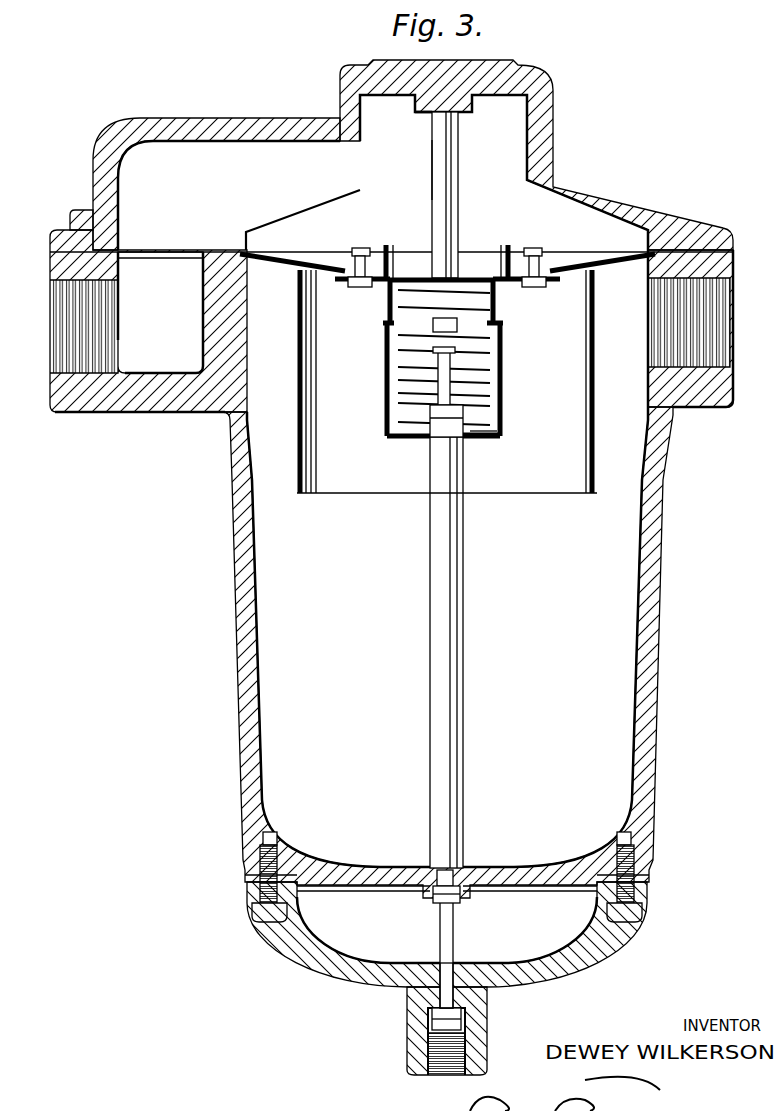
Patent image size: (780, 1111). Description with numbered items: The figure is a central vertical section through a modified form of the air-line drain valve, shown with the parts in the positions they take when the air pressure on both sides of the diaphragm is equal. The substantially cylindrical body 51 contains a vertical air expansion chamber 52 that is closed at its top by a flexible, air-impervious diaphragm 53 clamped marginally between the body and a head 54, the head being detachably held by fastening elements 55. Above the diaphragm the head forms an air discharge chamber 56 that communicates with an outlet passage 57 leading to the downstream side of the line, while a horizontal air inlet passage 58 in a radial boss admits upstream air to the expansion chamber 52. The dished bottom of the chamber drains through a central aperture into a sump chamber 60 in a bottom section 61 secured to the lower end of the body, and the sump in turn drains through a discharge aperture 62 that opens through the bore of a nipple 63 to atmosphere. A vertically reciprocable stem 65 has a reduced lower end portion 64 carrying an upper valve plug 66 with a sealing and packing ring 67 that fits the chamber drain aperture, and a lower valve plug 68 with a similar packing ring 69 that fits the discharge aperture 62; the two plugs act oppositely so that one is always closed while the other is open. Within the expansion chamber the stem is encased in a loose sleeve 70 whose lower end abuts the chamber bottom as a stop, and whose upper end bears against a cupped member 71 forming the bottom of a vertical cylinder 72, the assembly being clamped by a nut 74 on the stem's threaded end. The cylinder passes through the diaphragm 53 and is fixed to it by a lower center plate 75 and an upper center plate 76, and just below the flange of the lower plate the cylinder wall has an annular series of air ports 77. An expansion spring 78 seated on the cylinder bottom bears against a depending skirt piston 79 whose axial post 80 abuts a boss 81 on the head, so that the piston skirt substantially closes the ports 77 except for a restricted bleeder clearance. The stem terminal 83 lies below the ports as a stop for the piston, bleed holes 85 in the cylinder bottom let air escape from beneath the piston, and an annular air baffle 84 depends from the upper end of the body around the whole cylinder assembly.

The body 51 is at (439, 652).
The air expansion chamber 52 is at (259, 610).
The flexible diaphragm 53 is at (312, 257).
The head 54 is at (266, 112).
The fastening elements 55 is at (74, 210).
The air discharge chamber 56 is at (528, 152).
The outlet passage 57 is at (54, 323).
The air inlet passage 58 is at (726, 310).
The sump chamber 60 is at (447, 934).
The bottom section 61 is at (583, 946).
The discharge aperture 62 is at (454, 962).
The nipple 63 is at (487, 1047).
The lower end portion of stem 64 is at (440, 928).
The stem 65 is at (490, 395).
The valve plug 66 is at (444, 875).
The sealing and packing ring 67 is at (455, 893).
The valve plug 68 is at (440, 1067).
The sealing and packing ring 69 is at (432, 1021).
The sleeve 70 is at (463, 682).
The cupped member 71 is at (467, 438).
The cylinder 72 is at (505, 378).
The nut 74 is at (428, 424).
The lower center plate 75 is at (350, 285).
The upper center plate 76 is at (345, 255).
The air ports 77 is at (388, 326).
The expansion spring 78 is at (410, 366).
The skirt piston 79 is at (468, 279).
The axial post 80 is at (433, 170).
The boss 81 is at (419, 112).
The stem terminal 83 is at (433, 349).
The annular air baffle 84 is at (594, 462).
The bleed holes 85 is at (488, 436).